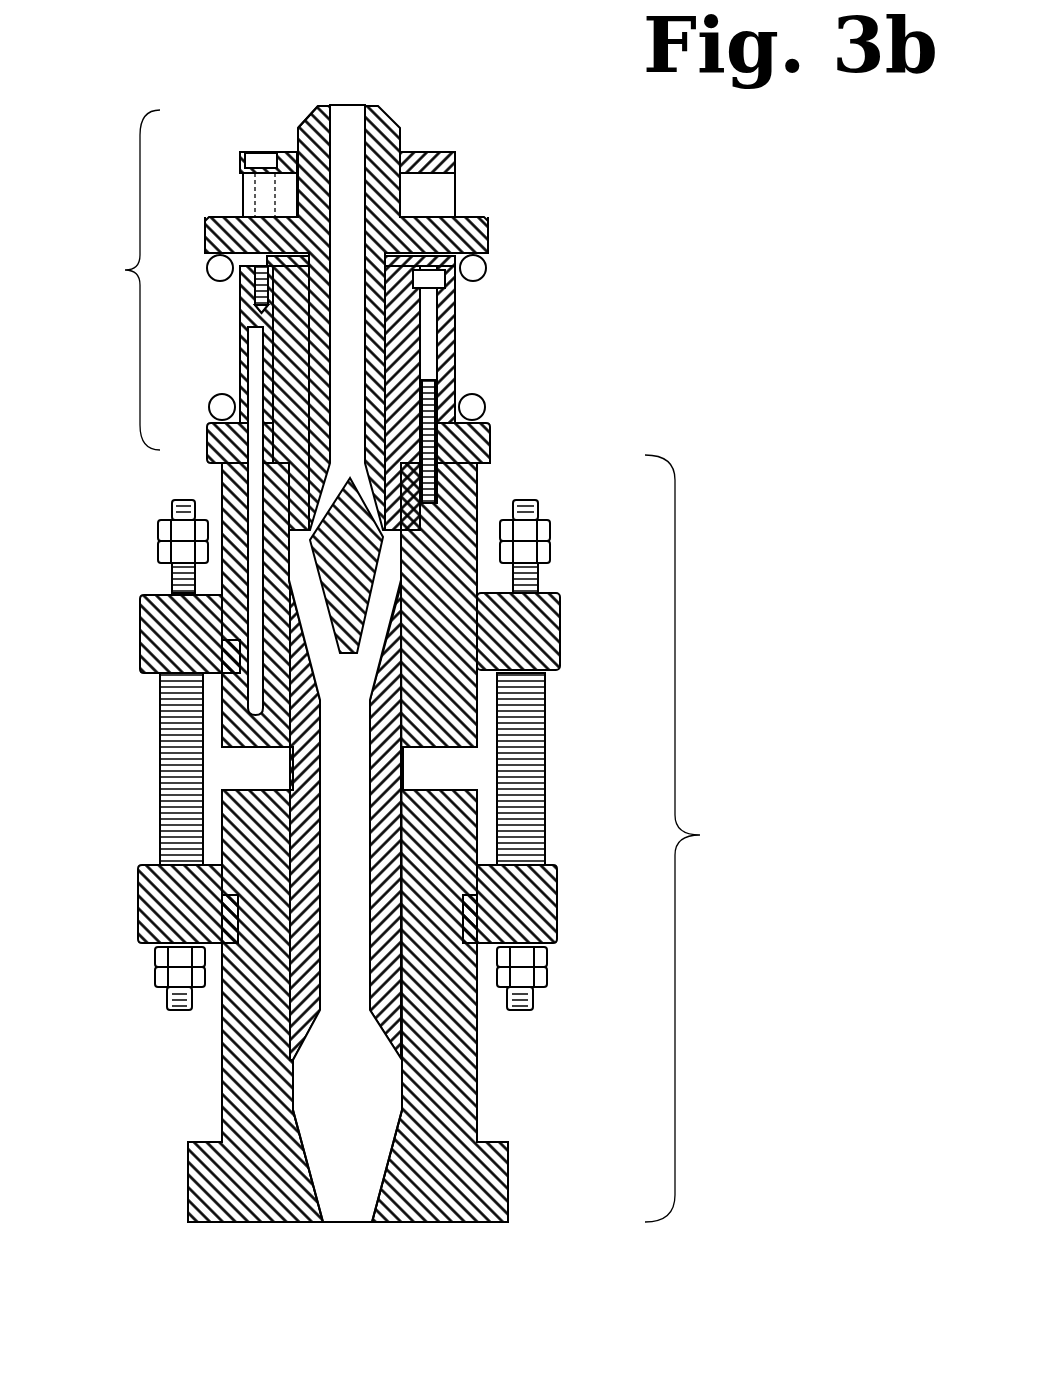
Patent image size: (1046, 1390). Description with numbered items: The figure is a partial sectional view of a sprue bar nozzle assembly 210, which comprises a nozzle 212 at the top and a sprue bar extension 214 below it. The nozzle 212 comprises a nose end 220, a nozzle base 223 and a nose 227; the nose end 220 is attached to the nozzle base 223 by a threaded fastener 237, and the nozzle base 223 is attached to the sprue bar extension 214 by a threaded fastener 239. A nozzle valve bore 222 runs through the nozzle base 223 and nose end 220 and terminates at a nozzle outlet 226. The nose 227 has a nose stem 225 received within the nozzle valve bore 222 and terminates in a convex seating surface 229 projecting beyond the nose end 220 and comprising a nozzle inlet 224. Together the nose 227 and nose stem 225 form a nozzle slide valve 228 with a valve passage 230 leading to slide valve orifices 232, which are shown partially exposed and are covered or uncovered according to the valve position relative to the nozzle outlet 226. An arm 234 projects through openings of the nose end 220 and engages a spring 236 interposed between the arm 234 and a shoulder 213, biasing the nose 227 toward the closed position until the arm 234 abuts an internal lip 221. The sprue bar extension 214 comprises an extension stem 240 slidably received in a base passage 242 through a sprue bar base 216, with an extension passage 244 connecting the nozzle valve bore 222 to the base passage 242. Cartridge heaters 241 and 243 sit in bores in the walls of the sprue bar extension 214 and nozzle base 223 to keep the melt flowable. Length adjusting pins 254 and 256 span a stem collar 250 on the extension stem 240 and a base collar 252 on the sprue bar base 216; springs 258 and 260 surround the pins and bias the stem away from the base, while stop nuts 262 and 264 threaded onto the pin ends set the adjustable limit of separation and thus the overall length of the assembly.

The sprue bar nozzle assembly 210 is at (642, 175).
The nozzle 212 is at (122, 270).
The shoulder 213 is at (479, 442).
The sprue bar extension 214 is at (703, 835).
The sprue bar base 216 is at (489, 1152).
The nose end 220 is at (457, 196).
The internal lip 221 is at (455, 160).
The nozzle valve bore 222 is at (310, 380).
The nozzle base 223 is at (455, 346).
The nozzle inlet 224 is at (372, 108).
The nose stem 225 is at (432, 302).
The nozzle outlet 226 is at (302, 527).
The nose 227 is at (393, 160).
The nozzle slide valve 228 is at (464, 372).
The seating surface 229 is at (279, 117).
The valve passage 230 is at (352, 118).
The slide valve orifices 232 is at (292, 572).
The arm 234 is at (476, 219).
The spring 236 is at (479, 268).
The threaded fastener 237 is at (266, 157).
The threaded fastener 239 is at (388, 337).
The extension stem 240 is at (385, 805).
The cartridge heater 241 is at (258, 493).
The base passage 242 is at (343, 1208).
The cartridge heater 243 is at (262, 423).
The extension passage 244 is at (341, 792).
The stem collar 250 is at (555, 610).
The base collar 252 is at (545, 872).
The length adjusting pin 254 is at (545, 566).
The length adjusting pin 256 is at (172, 560).
The spring 258 is at (542, 690).
The spring 260 is at (170, 762).
The stop nut 262 is at (542, 528).
The stop nut 264 is at (166, 528).